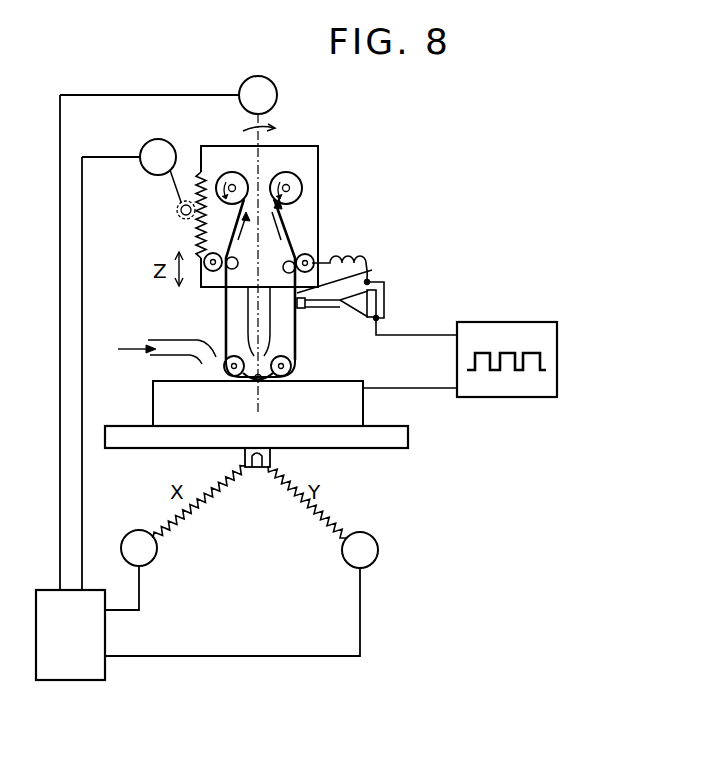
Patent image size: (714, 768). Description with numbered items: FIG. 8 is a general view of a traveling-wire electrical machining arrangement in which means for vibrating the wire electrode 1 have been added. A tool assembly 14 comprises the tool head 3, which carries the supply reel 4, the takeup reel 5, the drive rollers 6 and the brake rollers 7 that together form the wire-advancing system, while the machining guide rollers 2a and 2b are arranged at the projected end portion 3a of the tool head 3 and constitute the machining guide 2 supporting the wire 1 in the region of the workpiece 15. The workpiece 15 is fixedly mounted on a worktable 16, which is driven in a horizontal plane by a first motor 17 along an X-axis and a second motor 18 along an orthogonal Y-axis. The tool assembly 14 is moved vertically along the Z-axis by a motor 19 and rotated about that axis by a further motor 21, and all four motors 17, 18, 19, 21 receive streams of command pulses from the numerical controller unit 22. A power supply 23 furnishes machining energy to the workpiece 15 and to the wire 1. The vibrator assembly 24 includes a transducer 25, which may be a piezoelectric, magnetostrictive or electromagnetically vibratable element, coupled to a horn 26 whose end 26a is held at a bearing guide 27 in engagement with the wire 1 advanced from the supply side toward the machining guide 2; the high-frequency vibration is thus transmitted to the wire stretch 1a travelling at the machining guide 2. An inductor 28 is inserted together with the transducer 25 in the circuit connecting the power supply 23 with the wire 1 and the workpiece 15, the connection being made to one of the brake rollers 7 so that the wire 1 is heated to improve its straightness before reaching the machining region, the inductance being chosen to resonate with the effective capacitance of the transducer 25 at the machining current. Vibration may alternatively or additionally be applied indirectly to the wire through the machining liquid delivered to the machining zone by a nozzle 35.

The wire electrode 1 is at (222, 292).
The wire stretch 1a is at (262, 380).
The machining guide 2 is at (266, 357).
The machining guide roller 2a is at (224, 374).
The machining guide roller 2b is at (294, 375).
The tool head 3 is at (318, 160).
The projected end portion 3a is at (256, 318).
The supply reel 4 is at (293, 170).
The takeup reel 5 is at (223, 172).
The drive rollers 6 is at (219, 242).
The brake rollers 7 is at (297, 242).
The tool assembly 14 is at (169, 233).
The workpiece 15 is at (152, 396).
The worktable 16 is at (408, 438).
The first motor 17 is at (157, 552).
The second motor 18 is at (378, 552).
The motor 19 is at (146, 142).
The further motor 21 is at (259, 76).
The numerical controller unit 22 is at (70, 681).
The power supply 23 is at (557, 353).
The vibrator assembly 24 is at (460, 262).
The transducer 25 is at (386, 303).
The horn 26 is at (333, 307).
The horn end 26a is at (300, 309).
The bearing guide 27 is at (372, 270).
The inductor 28 is at (346, 257).
The nozzle 35 is at (166, 340).